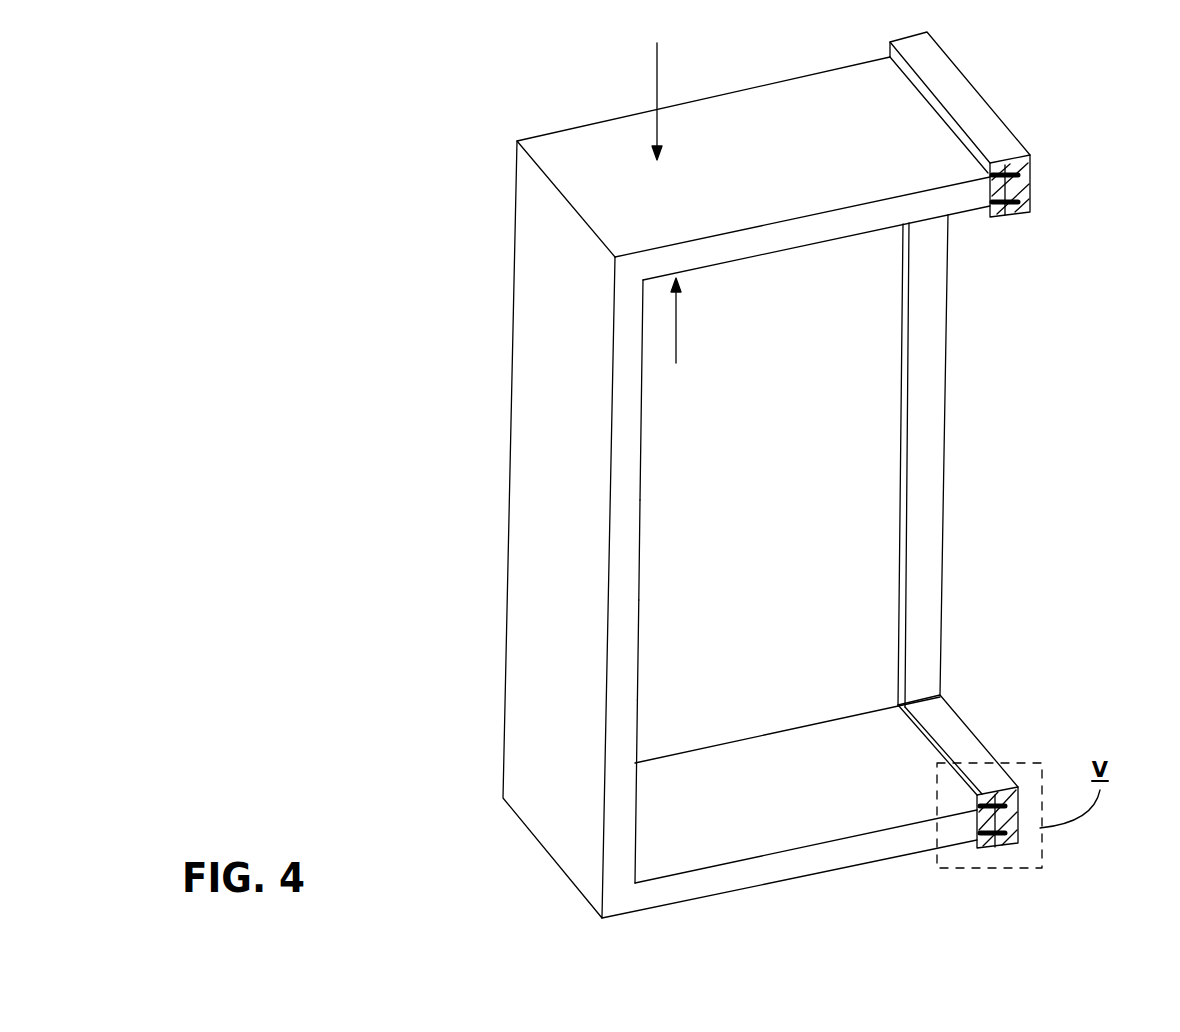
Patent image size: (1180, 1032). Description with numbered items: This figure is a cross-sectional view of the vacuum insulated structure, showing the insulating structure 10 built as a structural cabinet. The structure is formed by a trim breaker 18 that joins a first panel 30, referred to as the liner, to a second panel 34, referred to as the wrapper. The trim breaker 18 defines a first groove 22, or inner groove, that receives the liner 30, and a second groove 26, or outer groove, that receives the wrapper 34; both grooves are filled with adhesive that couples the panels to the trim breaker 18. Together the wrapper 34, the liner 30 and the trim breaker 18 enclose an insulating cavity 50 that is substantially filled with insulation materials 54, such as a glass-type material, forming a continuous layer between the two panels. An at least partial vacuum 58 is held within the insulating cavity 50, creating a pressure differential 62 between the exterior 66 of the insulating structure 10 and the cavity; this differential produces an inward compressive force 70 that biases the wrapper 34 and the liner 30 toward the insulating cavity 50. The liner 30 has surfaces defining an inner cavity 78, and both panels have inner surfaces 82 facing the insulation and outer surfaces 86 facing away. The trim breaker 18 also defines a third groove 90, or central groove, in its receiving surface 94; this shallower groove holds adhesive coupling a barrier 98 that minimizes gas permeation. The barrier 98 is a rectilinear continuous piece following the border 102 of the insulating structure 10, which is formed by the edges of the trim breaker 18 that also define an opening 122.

The insulating structure 10 is at (448, 193).
The trim breaker 18 is at (965, 93).
The first groove 22 is at (1030, 200).
The second groove 26 is at (1000, 172).
The first panel 30 is at (620, 560).
The second panel 34 is at (733, 153).
The insulating cavity 50 is at (632, 413).
The insulation materials 54 is at (620, 515).
The at least partial vacuum 58 is at (612, 628).
The pressure differential 62 is at (842, 205).
The exterior 66 is at (568, 155).
The inward compressive force 70 is at (655, 86).
The inner cavity 78 is at (855, 490).
The inner surfaces 82 is at (697, 872).
The outer surfaces 86 is at (790, 125).
The third groove 90 is at (1010, 193).
The receiving surface 94 is at (1000, 212).
The barrier 98 is at (980, 820).
The border 102 is at (942, 612).
The opening 122 is at (815, 560).